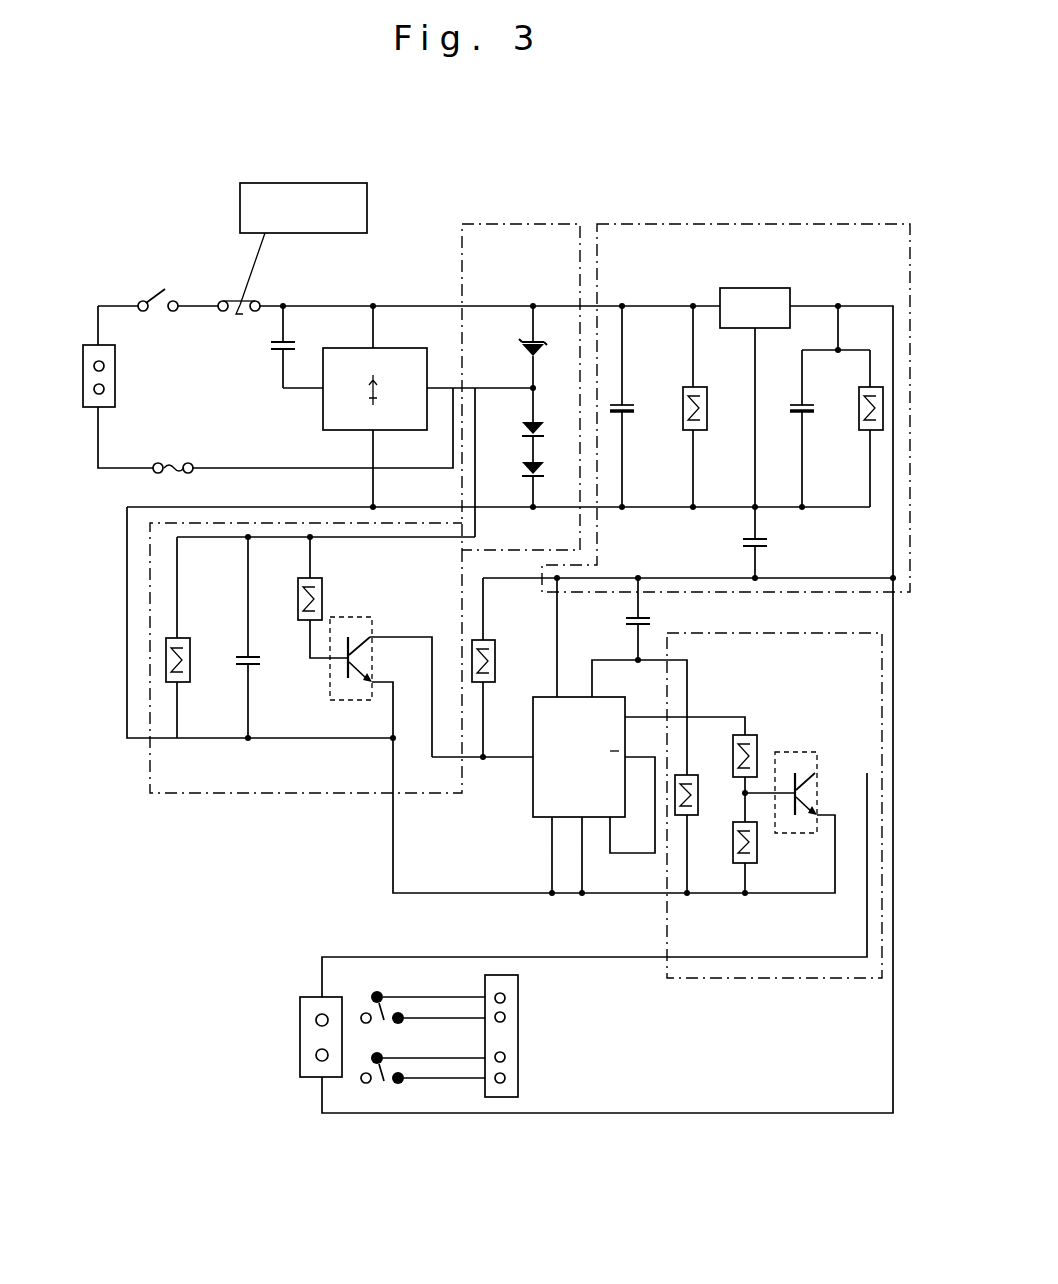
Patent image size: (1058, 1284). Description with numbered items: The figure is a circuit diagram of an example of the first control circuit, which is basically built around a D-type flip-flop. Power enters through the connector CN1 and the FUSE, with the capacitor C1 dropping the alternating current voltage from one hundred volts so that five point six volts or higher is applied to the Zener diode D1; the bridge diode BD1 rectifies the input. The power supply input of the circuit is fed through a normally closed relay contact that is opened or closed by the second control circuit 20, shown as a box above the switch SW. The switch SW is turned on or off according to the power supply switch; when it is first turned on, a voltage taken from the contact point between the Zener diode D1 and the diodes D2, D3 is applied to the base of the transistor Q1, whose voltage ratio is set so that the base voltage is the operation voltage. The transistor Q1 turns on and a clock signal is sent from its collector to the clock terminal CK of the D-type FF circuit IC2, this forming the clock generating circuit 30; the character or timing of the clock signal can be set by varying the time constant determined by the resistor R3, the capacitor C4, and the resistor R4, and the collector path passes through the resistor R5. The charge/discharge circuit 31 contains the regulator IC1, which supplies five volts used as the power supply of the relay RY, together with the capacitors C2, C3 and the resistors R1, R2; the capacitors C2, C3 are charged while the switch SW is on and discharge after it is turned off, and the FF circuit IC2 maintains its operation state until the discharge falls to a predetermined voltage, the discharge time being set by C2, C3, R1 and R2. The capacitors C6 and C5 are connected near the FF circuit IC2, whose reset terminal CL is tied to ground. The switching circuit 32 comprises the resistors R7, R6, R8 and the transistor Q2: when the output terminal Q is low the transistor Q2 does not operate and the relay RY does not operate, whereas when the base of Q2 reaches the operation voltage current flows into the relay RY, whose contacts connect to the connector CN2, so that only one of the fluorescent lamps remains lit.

The second control circuit 20 is at (340, 183).
The clock generating circuit 30 is at (503, 222).
The charge/discharge circuit 31 is at (668, 222).
The switching circuit 32 is at (790, 978).
The switch SW is at (176, 300).
The capacitor C1 is at (297, 335).
The connector CN1 is at (118, 397).
The fuse FUSE is at (173, 471).
The bridge diode BD1 is at (378, 379).
The Zener diode D1 is at (537, 340).
The diode D2 is at (541, 426).
The diode D3 is at (538, 472).
The element IC1 is at (765, 288).
The resistor R1 is at (700, 387).
The capacitor C2 is at (630, 413).
The capacitor C3 is at (795, 413).
The resistor R2 is at (866, 432).
The capacitor C6 is at (745, 543).
The capacitor C5 is at (650, 621).
The resistor R3 is at (188, 638).
The capacitor C4 is at (242, 668).
The resistor R4 is at (305, 622).
The transistor Q1 is at (343, 700).
The resistor R5 is at (493, 640).
The D-type FF circuit IC2 is at (538, 820).
The resistor R7 is at (690, 773).
The resistor R6 is at (748, 735).
The resistor R8 is at (752, 865).
The transistor Q2 is at (800, 836).
The relay RY is at (298, 1065).
The connector CN2 is at (520, 1030).